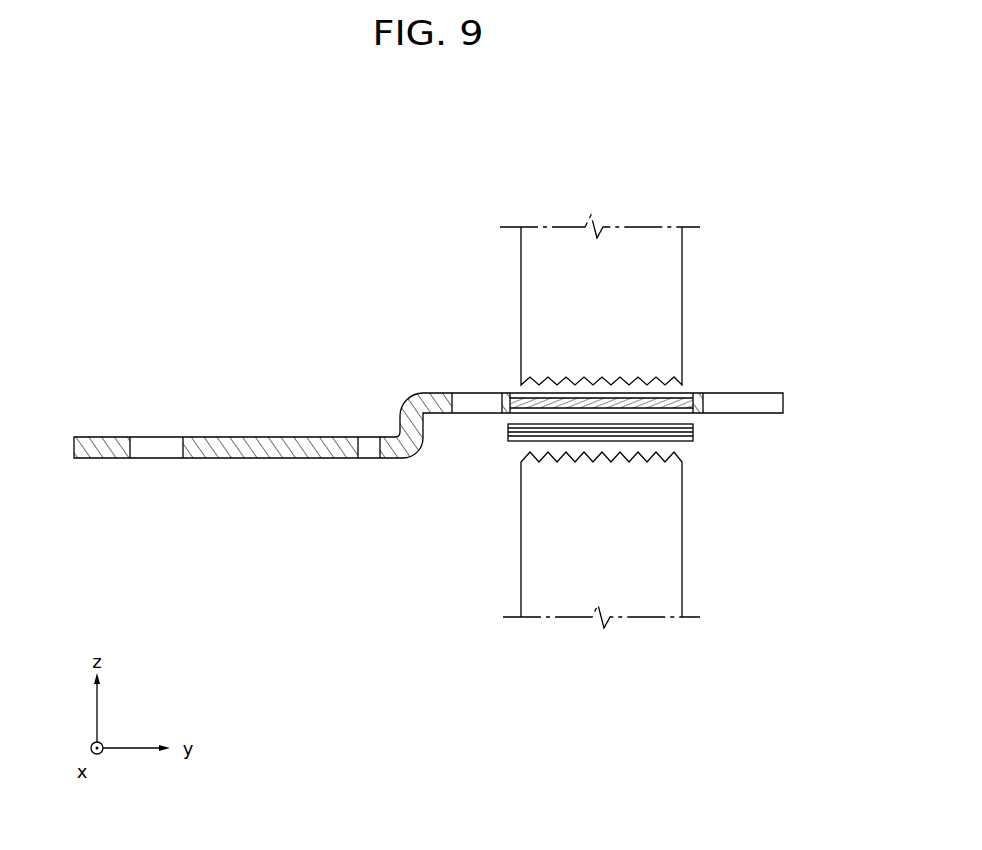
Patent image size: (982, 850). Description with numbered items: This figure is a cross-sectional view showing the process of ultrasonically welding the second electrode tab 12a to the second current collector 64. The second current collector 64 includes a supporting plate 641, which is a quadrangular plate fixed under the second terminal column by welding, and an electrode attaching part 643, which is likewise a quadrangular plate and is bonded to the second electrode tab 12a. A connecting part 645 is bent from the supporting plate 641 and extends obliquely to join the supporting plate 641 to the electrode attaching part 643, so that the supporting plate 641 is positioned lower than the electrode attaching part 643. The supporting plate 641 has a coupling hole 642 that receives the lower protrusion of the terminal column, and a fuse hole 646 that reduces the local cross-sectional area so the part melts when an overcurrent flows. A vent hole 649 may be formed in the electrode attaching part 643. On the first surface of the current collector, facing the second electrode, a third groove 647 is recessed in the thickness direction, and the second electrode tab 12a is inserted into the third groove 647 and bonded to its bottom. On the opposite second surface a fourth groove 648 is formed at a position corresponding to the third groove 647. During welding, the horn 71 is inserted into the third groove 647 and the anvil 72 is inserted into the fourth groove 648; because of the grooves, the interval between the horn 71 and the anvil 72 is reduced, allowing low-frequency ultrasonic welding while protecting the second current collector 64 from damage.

The second current collector 64 is at (223, 411).
The supporting plate 641 is at (270, 450).
The coupling hole 642 is at (160, 450).
The connecting part 645 is at (396, 428).
The fuse hole 646 is at (366, 450).
The third groove 647 is at (635, 408).
The fourth groove 648 is at (622, 400).
The vent hole 649 is at (478, 405).
The electrode attaching part 643 is at (648, 405).
The second electrode tab 12a is at (693, 436).
The horn 71 is at (660, 543).
The anvil 72 is at (655, 265).